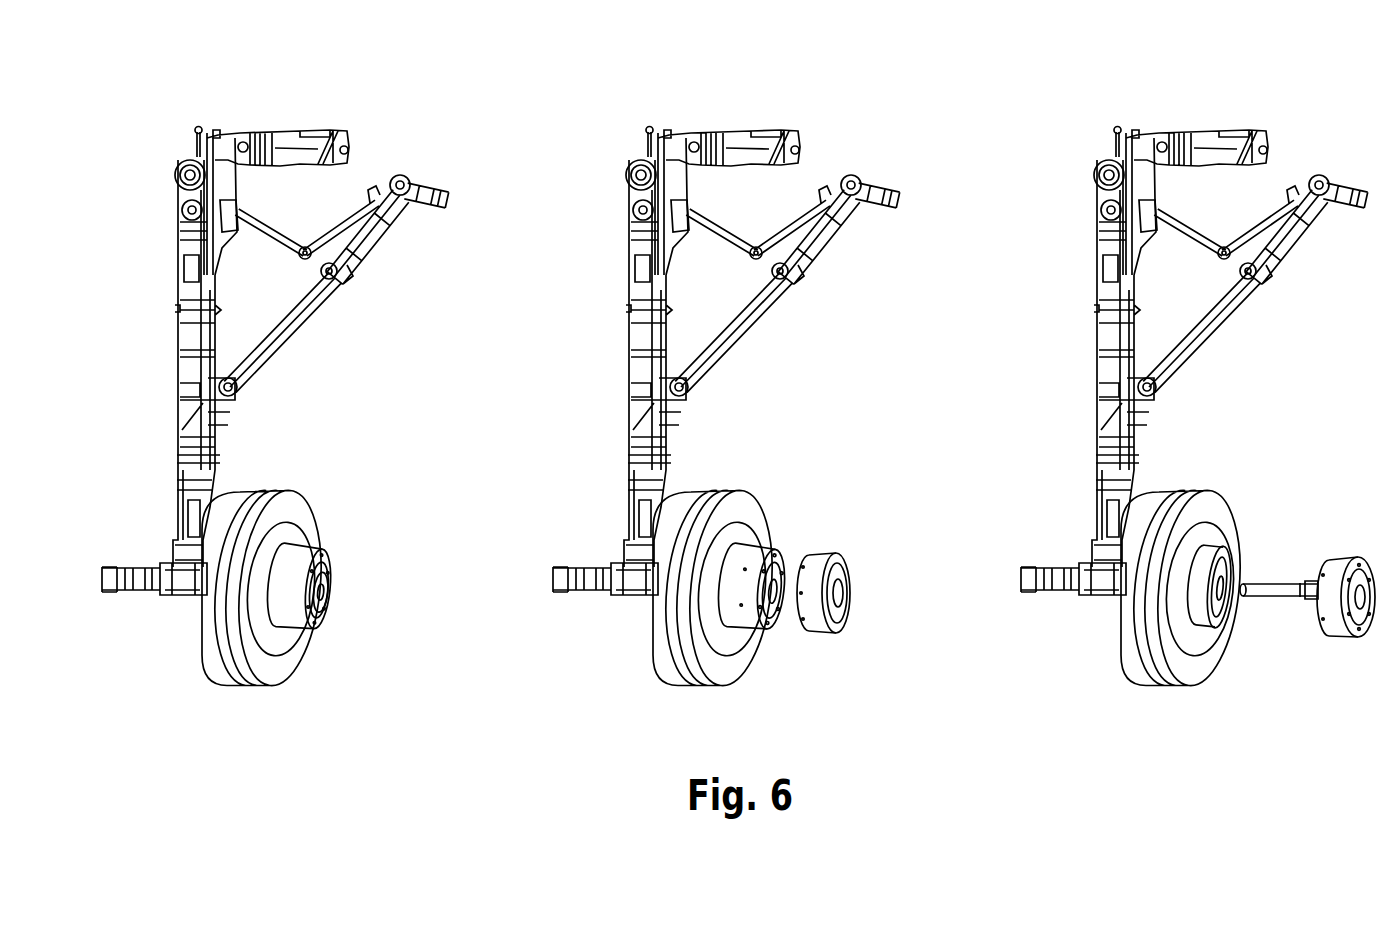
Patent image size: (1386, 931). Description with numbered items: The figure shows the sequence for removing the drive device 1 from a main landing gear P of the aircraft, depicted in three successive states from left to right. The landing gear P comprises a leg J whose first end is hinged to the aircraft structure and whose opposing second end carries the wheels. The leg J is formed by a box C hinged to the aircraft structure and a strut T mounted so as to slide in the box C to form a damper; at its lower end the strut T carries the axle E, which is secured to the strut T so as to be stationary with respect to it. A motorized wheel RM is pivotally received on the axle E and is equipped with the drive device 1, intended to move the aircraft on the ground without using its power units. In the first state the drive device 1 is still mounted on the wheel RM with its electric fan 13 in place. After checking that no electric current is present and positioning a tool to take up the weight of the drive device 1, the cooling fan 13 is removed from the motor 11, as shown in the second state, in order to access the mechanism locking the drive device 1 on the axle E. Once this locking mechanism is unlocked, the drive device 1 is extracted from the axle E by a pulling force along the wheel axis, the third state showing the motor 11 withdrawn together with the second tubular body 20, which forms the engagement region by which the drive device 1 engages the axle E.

The main landing gear P is at (271, 404).
The leg J is at (275, 347).
The box C is at (178, 291).
The strut T is at (200, 549).
The axle E is at (123, 592).
The motorized wheel RM is at (288, 624).
The drive device 1 is at (318, 550).
The electric fan 13 is at (823, 623).
The motor 11 is at (1346, 565).
The second tubular body 20 is at (1279, 626).